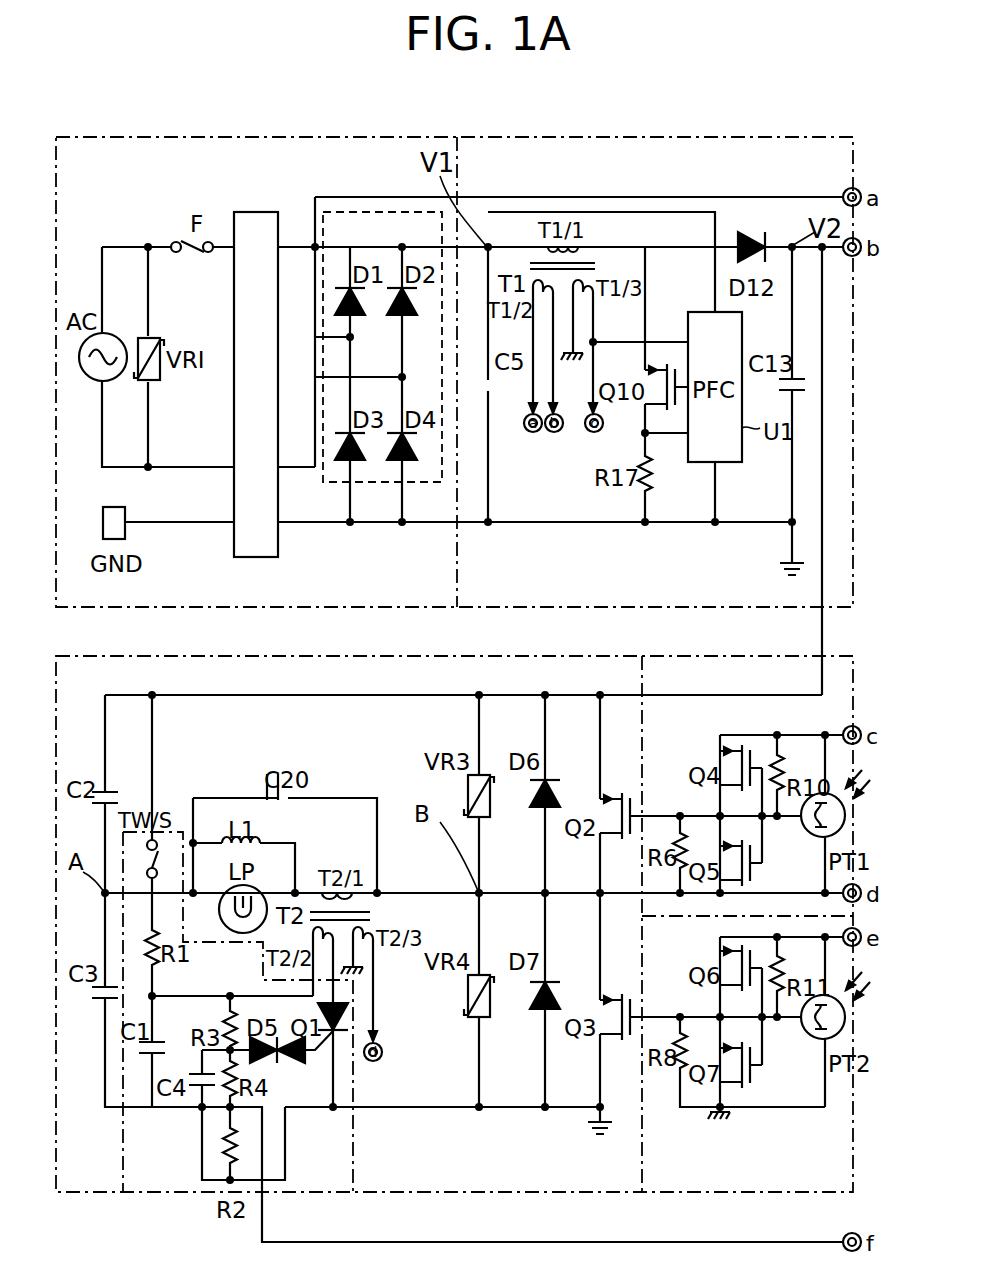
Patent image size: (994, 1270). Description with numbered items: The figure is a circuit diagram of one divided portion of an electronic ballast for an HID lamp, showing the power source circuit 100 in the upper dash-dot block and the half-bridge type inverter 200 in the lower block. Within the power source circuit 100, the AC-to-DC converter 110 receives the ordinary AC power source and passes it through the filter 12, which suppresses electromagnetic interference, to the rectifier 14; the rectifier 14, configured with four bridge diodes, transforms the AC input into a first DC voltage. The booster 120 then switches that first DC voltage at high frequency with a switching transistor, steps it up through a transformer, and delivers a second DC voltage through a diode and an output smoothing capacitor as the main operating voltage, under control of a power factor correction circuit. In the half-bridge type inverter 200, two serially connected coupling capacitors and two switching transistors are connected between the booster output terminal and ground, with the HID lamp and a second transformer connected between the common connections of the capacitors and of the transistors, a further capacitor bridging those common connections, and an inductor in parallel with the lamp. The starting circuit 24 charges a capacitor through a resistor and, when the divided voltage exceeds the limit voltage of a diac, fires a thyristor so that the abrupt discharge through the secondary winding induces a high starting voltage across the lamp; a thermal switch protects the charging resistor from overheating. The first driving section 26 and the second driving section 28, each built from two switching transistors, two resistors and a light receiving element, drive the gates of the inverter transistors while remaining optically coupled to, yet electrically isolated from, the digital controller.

The power source circuit 100 is at (652, 137).
The AC-to-DC converter 110 is at (395, 596).
The booster 120 is at (601, 596).
The filter 12 is at (256, 212).
The rectifier 14 is at (383, 212).
The half-bridge type inverter 200 is at (654, 666).
The starting circuit 24 is at (330, 1156).
The first driving section 26 is at (815, 888).
The second driving section 28 is at (815, 1146).